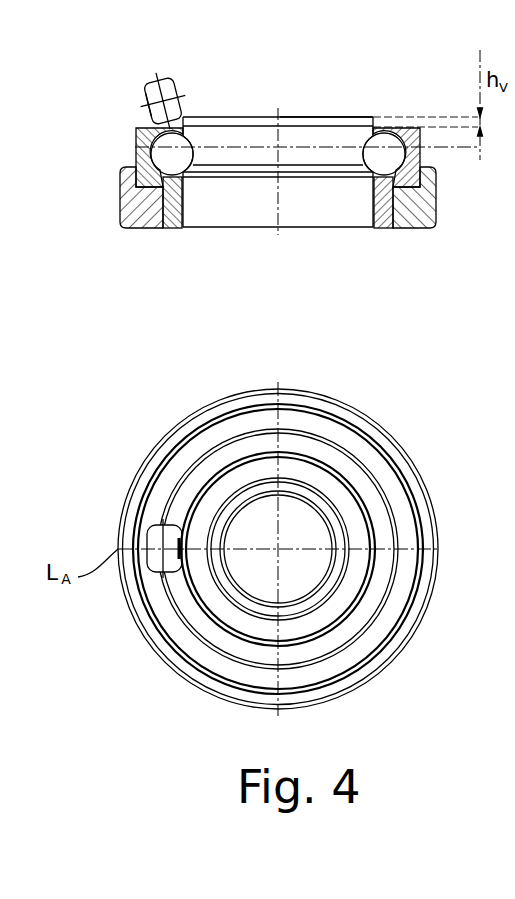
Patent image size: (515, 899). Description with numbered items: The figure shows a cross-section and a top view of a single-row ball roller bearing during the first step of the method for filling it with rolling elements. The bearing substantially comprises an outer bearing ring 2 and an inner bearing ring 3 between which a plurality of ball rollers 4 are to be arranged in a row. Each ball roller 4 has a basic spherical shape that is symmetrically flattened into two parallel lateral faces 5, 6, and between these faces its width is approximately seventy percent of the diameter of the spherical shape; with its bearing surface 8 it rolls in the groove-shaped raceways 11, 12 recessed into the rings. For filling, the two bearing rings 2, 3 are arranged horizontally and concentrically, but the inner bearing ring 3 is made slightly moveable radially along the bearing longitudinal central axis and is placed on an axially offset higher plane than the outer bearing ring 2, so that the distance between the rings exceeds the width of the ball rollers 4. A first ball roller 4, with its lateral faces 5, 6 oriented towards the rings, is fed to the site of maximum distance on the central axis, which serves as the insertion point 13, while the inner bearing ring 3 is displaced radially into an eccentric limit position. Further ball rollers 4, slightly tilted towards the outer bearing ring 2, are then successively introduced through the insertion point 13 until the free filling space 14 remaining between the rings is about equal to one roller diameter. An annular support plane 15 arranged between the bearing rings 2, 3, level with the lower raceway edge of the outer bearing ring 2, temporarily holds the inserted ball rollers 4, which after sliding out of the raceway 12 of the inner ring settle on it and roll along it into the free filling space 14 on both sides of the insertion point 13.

The outer bearing ring 2 is at (136, 133).
The inner bearing ring 3 is at (240, 117).
The ball rollers 4 is at (165, 88).
The lateral face 5 is at (147, 103).
The lateral face 6 is at (183, 83).
The bearing surface 8 is at (150, 85).
The raceway 11 is at (122, 182).
The raceway 12 is at (313, 121).
The insertion point 13 is at (130, 534).
The free filling space 14 is at (313, 448).
The annular support plane 15 is at (170, 229).